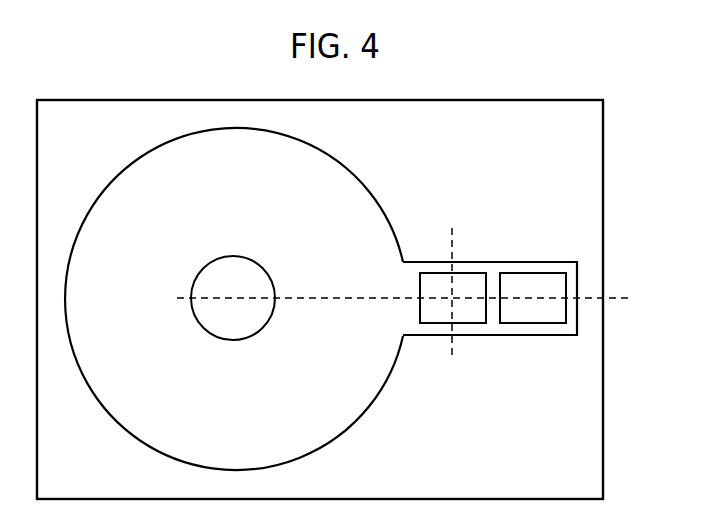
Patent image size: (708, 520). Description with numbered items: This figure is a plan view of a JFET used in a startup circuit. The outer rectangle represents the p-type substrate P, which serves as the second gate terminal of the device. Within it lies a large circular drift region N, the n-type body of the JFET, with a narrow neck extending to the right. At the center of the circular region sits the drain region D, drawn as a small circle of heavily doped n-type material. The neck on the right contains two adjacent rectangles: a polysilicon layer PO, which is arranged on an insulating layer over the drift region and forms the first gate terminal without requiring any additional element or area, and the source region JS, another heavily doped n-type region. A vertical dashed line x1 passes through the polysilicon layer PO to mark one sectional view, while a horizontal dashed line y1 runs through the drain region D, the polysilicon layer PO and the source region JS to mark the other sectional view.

The p-type substrate P is at (320, 299).
The drift region N is at (321, 299).
The drain region D is at (233, 256).
The polysilicon layer PO is at (453, 298).
The source region JS is at (533, 273).
The line x1- x1 is at (456, 296).
The line y1- y1 is at (405, 301).